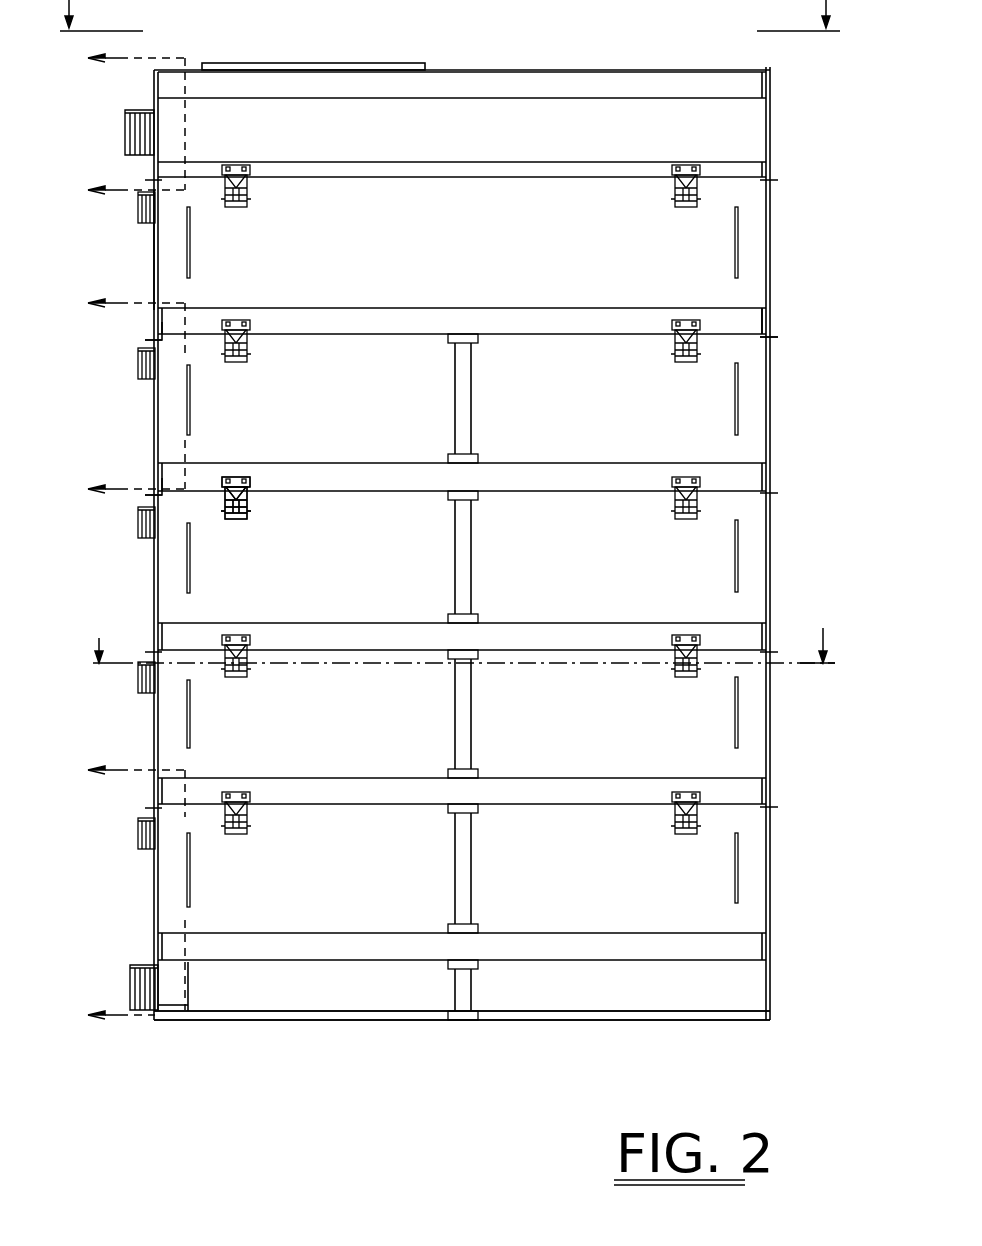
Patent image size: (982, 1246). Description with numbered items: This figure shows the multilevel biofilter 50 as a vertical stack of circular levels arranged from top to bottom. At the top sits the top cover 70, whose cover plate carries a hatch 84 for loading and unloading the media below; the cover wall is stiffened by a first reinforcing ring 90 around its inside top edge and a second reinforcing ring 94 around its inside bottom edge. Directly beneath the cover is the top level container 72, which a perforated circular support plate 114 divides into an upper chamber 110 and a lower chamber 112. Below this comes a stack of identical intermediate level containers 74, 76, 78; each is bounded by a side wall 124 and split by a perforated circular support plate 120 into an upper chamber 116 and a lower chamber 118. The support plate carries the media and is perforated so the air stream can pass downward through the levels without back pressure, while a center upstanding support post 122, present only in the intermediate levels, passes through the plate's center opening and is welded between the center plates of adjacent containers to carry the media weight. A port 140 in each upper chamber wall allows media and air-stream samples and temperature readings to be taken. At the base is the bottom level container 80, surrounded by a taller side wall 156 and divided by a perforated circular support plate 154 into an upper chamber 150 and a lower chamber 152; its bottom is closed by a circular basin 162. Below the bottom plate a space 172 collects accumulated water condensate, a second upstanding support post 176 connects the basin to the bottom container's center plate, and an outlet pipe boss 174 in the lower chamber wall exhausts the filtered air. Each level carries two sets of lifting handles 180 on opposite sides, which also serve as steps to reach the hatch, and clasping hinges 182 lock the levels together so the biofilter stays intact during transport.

The oven apparatus 50 is at (830, 420).
The top cover 70 is at (747, 125).
The top level container 72 is at (757, 247).
The intermediate level container 74 is at (757, 400).
The intermediate level container 76 is at (755, 545).
The intermediate level container 78 is at (755, 727).
The bottom level container 80 is at (770, 874).
The hatch 84 is at (283, 63).
The first reinforcing ring 90 is at (770, 92).
The second reinforcing ring 94 is at (768, 173).
The upper chamber 110 is at (190, 290).
The lower chamber 112 is at (157, 323).
The perforated circular support plate 114 is at (745, 302).
The upper chamber 116 is at (208, 437).
The lower chamber 118 is at (158, 480).
The perforated circular support plate 120 is at (745, 461).
The center upstanding support post 122 is at (472, 418).
The side wall 124 is at (770, 362).
The port 140 is at (138, 365).
The upper chamber 150 is at (186, 912).
The lower chamber 152 is at (218, 985).
The perforated circular support plate 154 is at (745, 930).
The side wall 156 is at (770, 842).
The circular basin 162 is at (740, 1022).
The space 172 is at (755, 990).
The outlet pipe boss 174 is at (131, 969).
The second upstanding support post 176 is at (472, 990).
The lifting handles 180 is at (187, 232).
The clasping hinges 182 is at (221, 507).